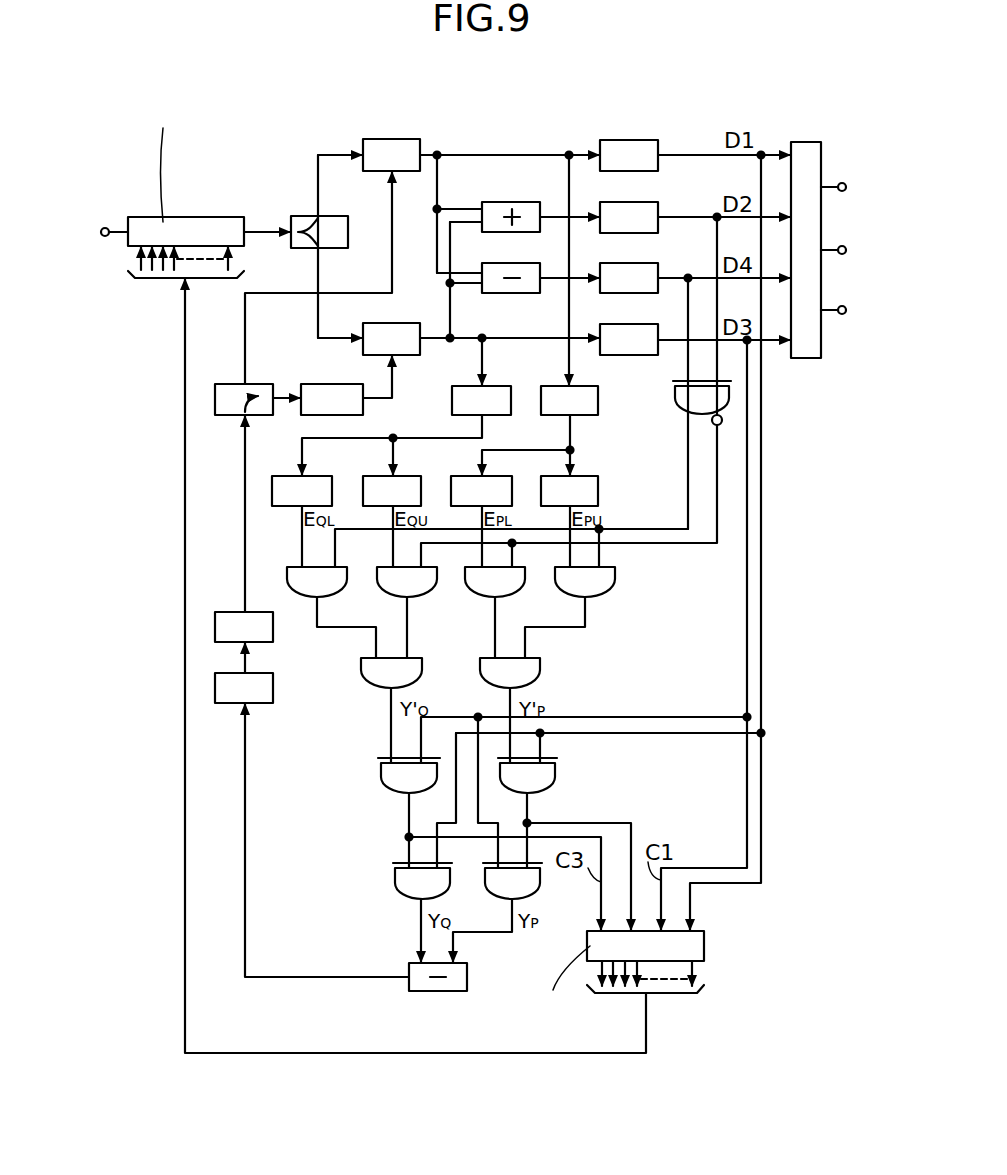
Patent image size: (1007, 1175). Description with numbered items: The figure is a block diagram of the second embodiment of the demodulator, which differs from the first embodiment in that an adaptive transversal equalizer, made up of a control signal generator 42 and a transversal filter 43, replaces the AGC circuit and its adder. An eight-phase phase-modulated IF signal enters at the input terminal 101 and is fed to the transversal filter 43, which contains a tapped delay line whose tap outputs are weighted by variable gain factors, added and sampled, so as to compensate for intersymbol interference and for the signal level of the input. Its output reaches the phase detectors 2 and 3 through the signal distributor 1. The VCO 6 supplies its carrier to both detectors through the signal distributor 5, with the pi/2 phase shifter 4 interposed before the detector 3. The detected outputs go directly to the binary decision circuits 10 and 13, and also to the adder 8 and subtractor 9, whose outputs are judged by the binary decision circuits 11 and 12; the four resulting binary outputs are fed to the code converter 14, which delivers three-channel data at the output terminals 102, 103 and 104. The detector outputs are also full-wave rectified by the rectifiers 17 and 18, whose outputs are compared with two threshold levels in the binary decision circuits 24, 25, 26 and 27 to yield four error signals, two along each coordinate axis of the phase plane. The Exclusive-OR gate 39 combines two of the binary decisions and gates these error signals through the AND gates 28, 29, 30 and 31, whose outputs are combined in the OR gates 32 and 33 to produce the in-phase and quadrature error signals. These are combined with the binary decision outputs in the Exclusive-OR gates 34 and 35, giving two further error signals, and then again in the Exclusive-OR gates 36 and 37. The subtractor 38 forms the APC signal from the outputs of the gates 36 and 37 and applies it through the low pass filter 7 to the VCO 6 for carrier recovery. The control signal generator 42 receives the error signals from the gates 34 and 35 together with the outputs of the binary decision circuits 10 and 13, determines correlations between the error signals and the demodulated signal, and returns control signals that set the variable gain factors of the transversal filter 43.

The input terminal 101 is at (105, 227).
The transversal filter 43 is at (203, 215).
The signal distributor 1 is at (311, 216).
The phase detector 2 is at (408, 139).
The phase detector 3 is at (393, 323).
The pi/2 phase shifter 4 is at (332, 384).
The signal distributor 5 is at (256, 384).
The VCO 6 is at (232, 612).
The low pass filter 7 is at (273, 688).
The adder 8 is at (510, 202).
The subtractor 9 is at (518, 263).
The binary decision circuit 10 is at (638, 140).
The binary decision circuit 11 is at (632, 202).
The binary decision circuit 12 is at (632, 263).
The binary decision circuit 13 is at (628, 324).
The code converter 14 is at (805, 142).
The output terminal 102 is at (841, 191).
The output terminal 103 is at (841, 254).
The output terminal 104 is at (841, 314).
The full-wave rectifier 17 is at (598, 400).
The full-wave rectifier 18 is at (511, 395).
The binary decision circuit 24 is at (590, 476).
The binary decision circuit 25 is at (497, 476).
The binary decision circuit 26 is at (405, 476).
The binary decision circuit 27 is at (312, 476).
The AND gate 28 is at (614, 585).
The AND gate 29 is at (525, 583).
The AND gate 30 is at (435, 583).
The AND gate 31 is at (347, 583).
The OR gate 32 is at (540, 668).
The OR gate 33 is at (422, 658).
The Exclusive-OR gate 34 is at (557, 772).
The Exclusive-OR gate 35 is at (378, 775).
The Exclusive-OR gate 36 is at (540, 880).
The Exclusive-OR gate 37 is at (395, 880).
The subtractor 38 is at (467, 972).
The Exclusive-OR gate 39 is at (668, 404).
The control signal generator 42 is at (704, 945).